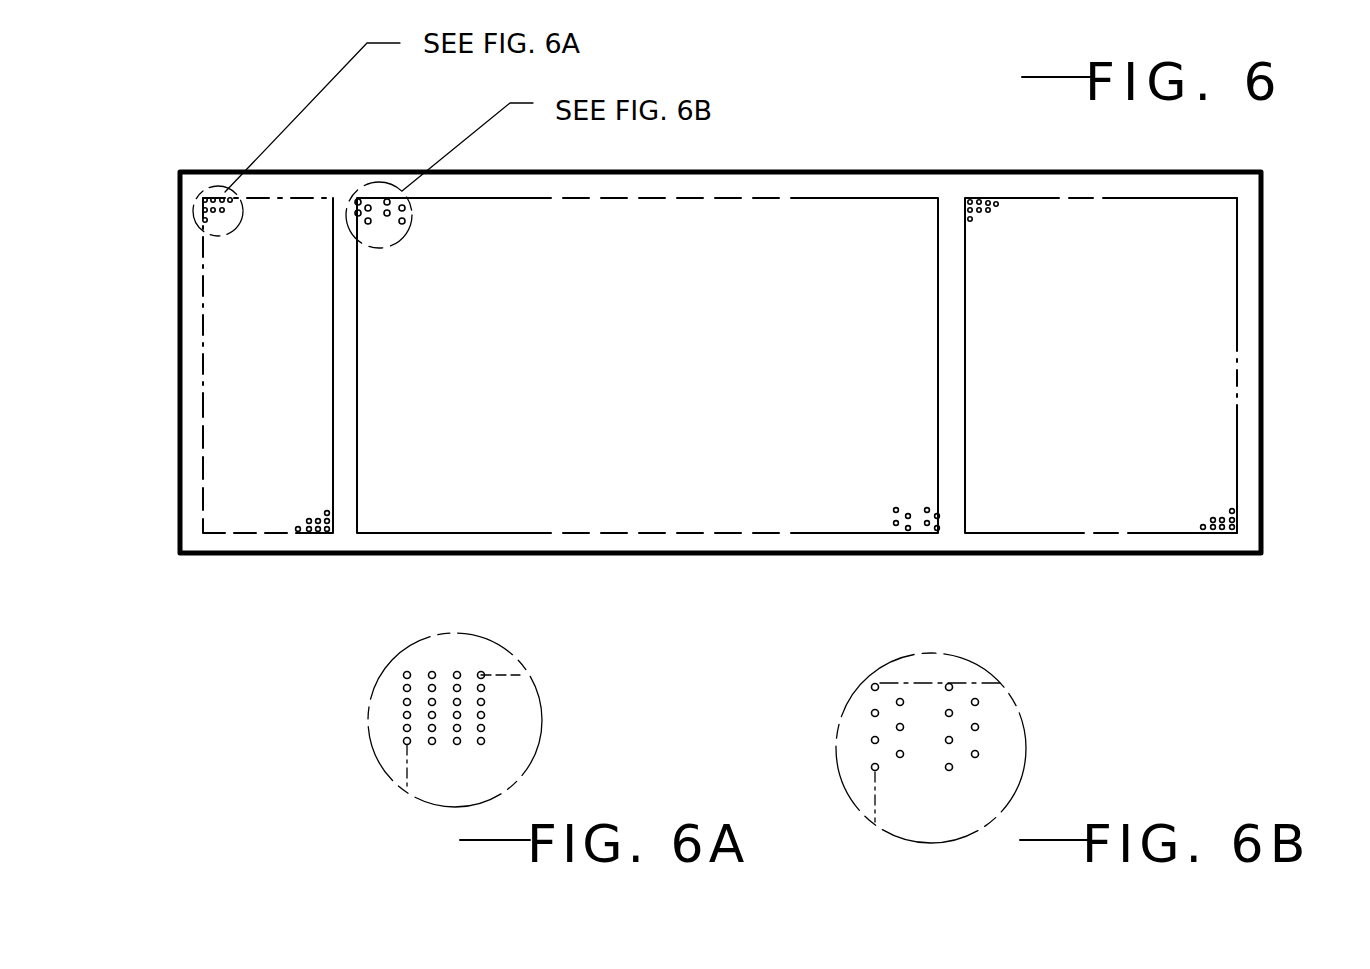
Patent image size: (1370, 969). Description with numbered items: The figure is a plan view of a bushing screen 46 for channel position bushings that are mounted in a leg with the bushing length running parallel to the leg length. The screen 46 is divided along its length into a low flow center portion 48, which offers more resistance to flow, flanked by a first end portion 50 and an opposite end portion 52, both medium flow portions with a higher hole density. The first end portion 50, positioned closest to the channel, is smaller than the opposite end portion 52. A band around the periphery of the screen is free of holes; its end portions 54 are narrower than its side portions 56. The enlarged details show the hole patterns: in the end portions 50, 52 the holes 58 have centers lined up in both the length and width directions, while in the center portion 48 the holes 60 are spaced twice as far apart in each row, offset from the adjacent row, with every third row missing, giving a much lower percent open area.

In FIG. 6, the screen 46 is at (838, 188).
In FIG. 6, the low flow center portion 48 is at (898, 236).
In FIG. 6, the first end portion 50 is at (222, 435).
In FIG. 6, the opposite end portion 52 is at (1207, 268).
In FIG. 6, the end portions of the band 54 is at (190, 349).
In FIG. 6, the side portions of the band 56 is at (1060, 186).
In FIG. 6, the holes 58 is at (309, 531).
In FIG. 6A, the holes 58 is at (485, 688).
In FIG. 6, the holes 60 is at (896, 525).
In FIG. 6B, the holes 60 is at (979, 727).